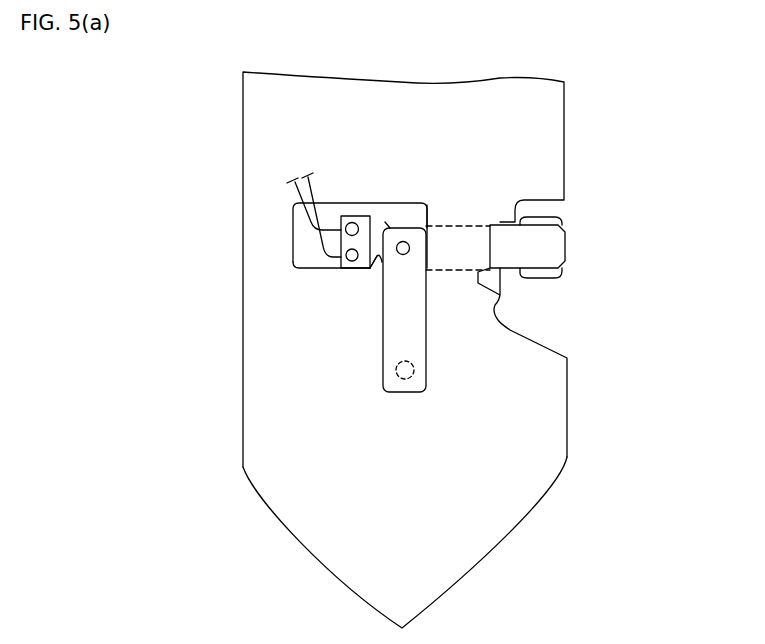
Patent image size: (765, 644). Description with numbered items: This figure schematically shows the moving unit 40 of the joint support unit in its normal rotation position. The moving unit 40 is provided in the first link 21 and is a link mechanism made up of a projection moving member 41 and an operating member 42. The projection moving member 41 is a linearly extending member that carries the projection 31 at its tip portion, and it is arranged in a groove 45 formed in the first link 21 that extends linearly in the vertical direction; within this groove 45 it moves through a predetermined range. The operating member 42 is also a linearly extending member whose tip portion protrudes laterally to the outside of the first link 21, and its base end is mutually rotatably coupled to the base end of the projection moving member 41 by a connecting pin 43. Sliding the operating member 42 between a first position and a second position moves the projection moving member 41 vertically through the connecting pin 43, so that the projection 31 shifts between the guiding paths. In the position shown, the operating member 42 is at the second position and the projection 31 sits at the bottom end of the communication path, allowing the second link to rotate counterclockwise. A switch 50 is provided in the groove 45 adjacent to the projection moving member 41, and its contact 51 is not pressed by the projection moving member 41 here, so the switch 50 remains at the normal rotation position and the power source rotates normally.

The first link 21 is at (552, 160).
The projection 31 is at (427, 380).
The moving unit 40 is at (634, 297).
The projection moving member 41 is at (415, 334).
The operating member 42 is at (558, 248).
The connecting pin 43 is at (403, 248).
The groove 45 is at (428, 216).
The switch 50 is at (356, 207).
The contact 51 is at (380, 268).